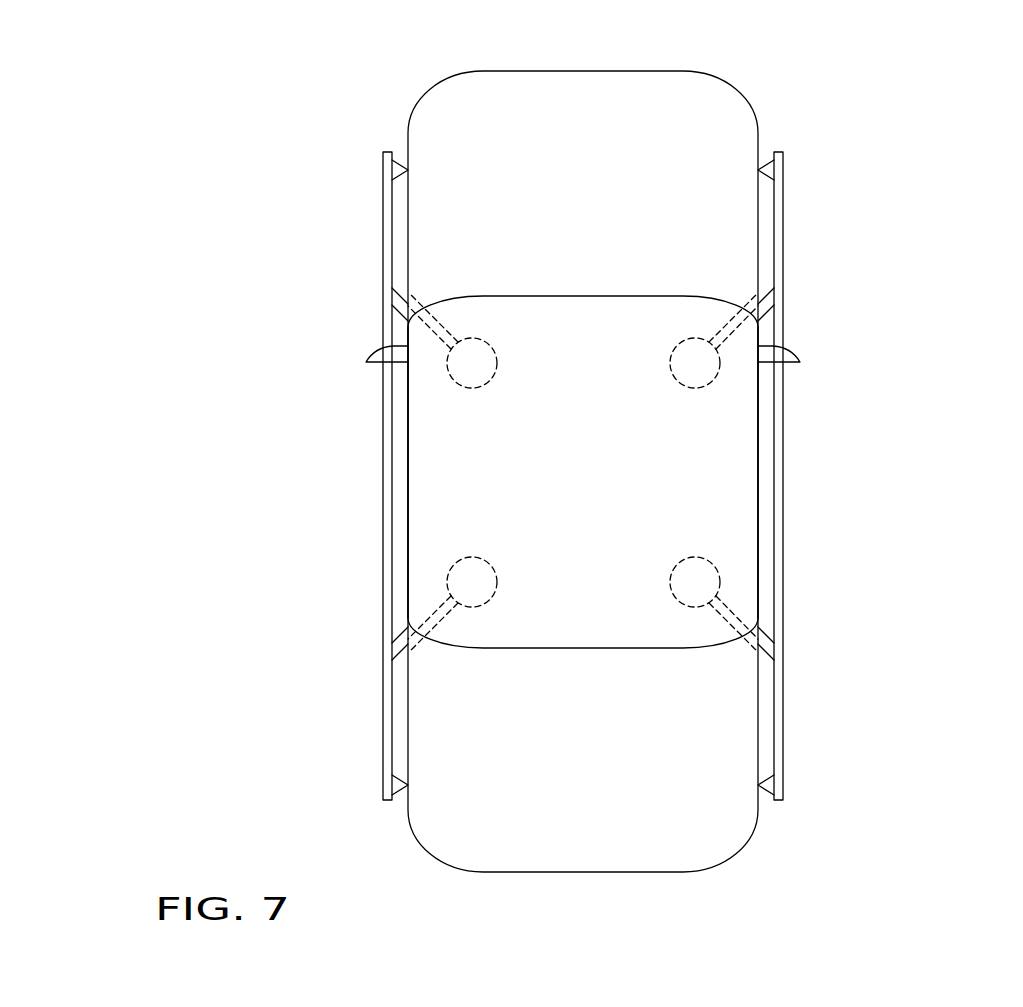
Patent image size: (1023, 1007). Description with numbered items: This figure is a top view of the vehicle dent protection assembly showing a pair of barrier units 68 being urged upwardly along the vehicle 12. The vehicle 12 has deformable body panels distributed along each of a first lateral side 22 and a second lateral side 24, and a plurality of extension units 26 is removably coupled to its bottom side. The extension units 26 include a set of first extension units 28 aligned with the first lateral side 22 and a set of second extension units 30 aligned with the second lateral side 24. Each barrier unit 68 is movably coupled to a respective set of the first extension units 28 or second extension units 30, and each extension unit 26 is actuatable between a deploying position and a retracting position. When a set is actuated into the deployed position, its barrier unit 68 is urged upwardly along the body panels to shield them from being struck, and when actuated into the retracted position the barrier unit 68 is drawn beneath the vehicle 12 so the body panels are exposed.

The vehicle 12 is at (587, 72).
The first lateral side 22 is at (408, 441).
The second lateral side 24 is at (757, 534).
The extension units 26 is at (498, 318).
The first extension units 28 is at (437, 555).
The second extension units 30 is at (703, 400).
The barrier units 68 is at (365, 688).